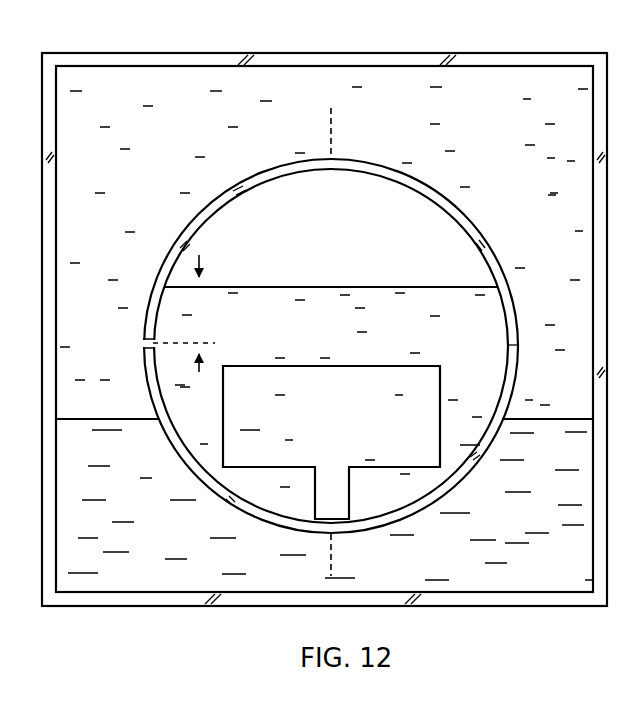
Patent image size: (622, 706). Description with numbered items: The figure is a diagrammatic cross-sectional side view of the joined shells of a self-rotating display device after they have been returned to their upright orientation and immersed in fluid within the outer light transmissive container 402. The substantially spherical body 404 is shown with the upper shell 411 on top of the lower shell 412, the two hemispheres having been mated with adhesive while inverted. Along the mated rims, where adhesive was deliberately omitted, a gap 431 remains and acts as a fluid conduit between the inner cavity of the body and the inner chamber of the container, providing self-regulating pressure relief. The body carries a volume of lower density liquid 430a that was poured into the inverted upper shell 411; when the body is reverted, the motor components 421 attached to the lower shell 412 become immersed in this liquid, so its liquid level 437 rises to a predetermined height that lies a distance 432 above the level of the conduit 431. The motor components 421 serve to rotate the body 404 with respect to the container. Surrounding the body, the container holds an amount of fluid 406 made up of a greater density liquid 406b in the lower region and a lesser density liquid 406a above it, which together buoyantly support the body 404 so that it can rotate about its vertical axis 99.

The outer light transmissive container 402 is at (192, 53).
The substantially spherical body 404 is at (343, 332).
The upper shell 411 is at (368, 163).
The lower shell 412 is at (228, 503).
The gap 431 is at (141, 343).
The vertical axis 99 is at (330, 118).
The liquid level 437 is at (376, 286).
The distance 432 is at (205, 258).
The lower density liquid 430a is at (333, 336).
The motor components 421 is at (373, 365).
The fluid 406 is at (522, 134).
The lesser density liquid 406a is at (582, 394).
The greater density liquid 406b is at (580, 471).